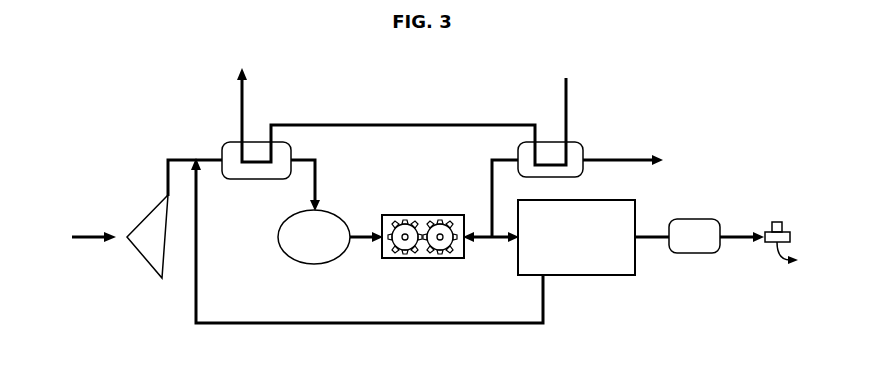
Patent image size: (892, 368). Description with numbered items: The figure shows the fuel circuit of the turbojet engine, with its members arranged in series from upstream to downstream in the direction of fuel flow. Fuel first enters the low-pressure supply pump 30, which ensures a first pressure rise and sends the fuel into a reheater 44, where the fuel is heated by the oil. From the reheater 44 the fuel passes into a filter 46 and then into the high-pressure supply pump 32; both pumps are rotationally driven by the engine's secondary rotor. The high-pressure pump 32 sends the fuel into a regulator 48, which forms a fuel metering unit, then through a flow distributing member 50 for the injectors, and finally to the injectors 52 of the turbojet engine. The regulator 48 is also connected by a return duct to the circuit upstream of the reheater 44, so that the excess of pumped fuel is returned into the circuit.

The low-pressure supply pump 30 is at (147, 236).
The high-pressure supply pump 32 is at (420, 222).
The reheater 44 is at (258, 148).
The filter 46 is at (314, 237).
The regulator 48 is at (576, 237).
The flow distributing member 50 is at (694, 236).
The injectors 52 is at (783, 267).